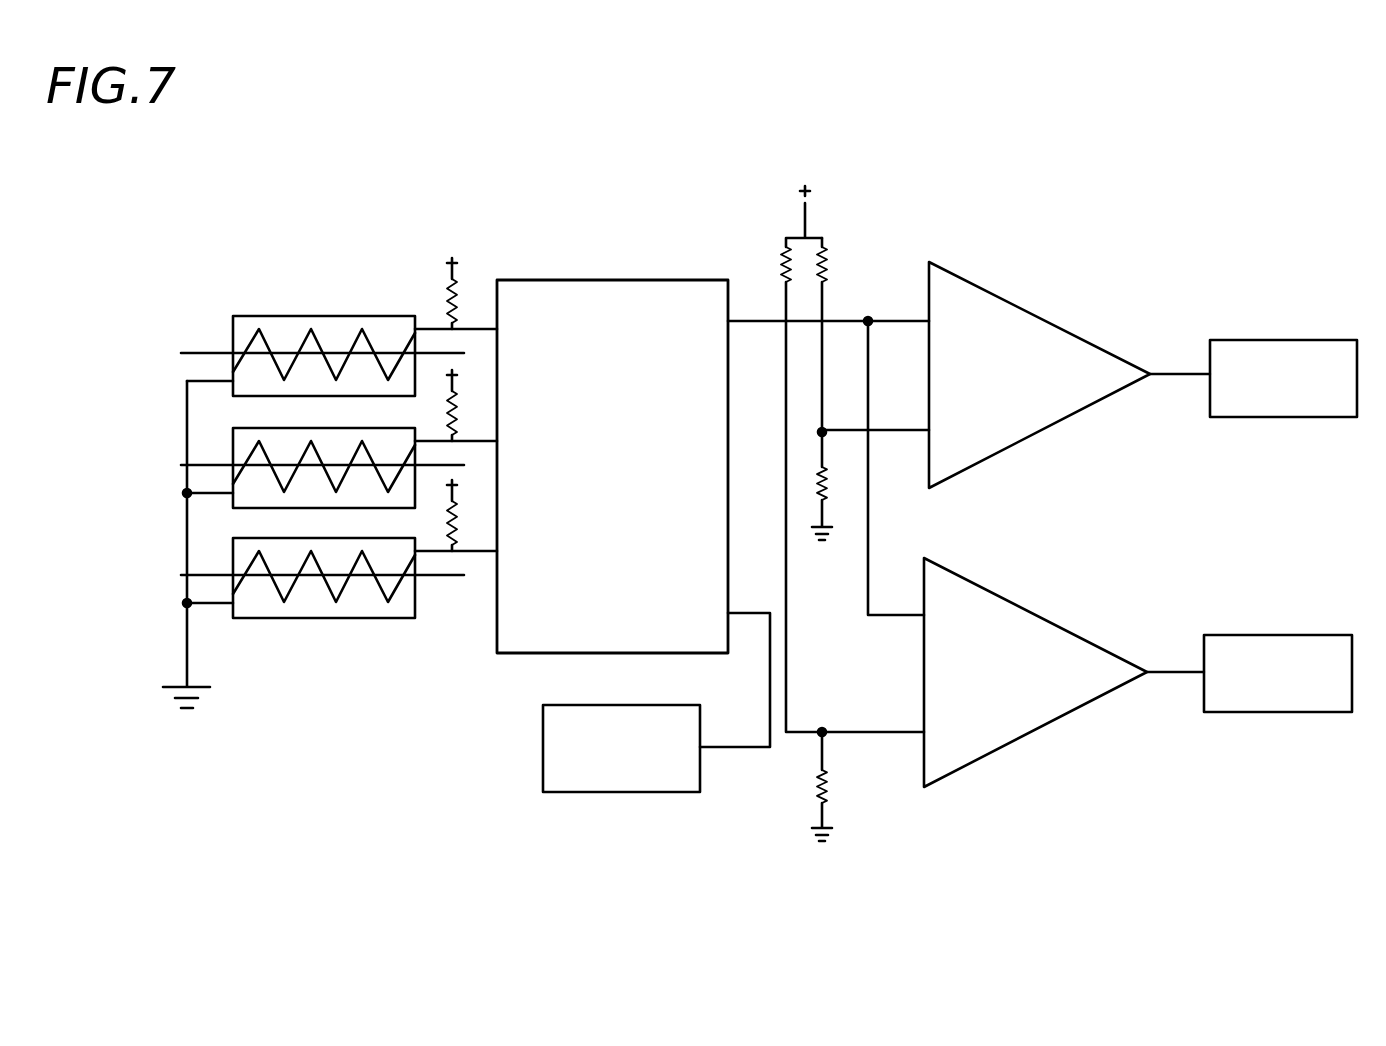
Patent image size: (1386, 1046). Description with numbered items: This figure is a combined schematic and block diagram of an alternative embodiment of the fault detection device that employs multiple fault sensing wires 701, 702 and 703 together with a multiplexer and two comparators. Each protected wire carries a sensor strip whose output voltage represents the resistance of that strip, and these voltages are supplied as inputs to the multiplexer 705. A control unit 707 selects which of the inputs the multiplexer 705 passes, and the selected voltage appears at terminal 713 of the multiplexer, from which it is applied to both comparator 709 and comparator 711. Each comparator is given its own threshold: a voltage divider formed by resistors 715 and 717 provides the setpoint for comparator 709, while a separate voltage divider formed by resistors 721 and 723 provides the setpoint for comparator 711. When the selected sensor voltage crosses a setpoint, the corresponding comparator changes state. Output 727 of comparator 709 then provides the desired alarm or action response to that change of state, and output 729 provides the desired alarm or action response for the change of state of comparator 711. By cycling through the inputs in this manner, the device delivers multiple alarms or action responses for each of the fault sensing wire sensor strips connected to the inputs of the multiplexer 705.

The fault sensing wire 701 is at (232, 326).
The fault sensing wire 702 is at (232, 437).
The fault sensing wire 703 is at (232, 547).
The multiplexer 705 is at (562, 278).
The control unit 707 is at (633, 792).
The comparator 709 is at (1082, 335).
The comparator 711 is at (1095, 643).
The terminal 713 is at (760, 320).
The resistor 715 is at (825, 270).
The resistor 717 is at (823, 478).
The resistor 721 is at (786, 265).
The resistor 723 is at (823, 775).
The output 727 is at (1283, 340).
The output 729 is at (1279, 635).